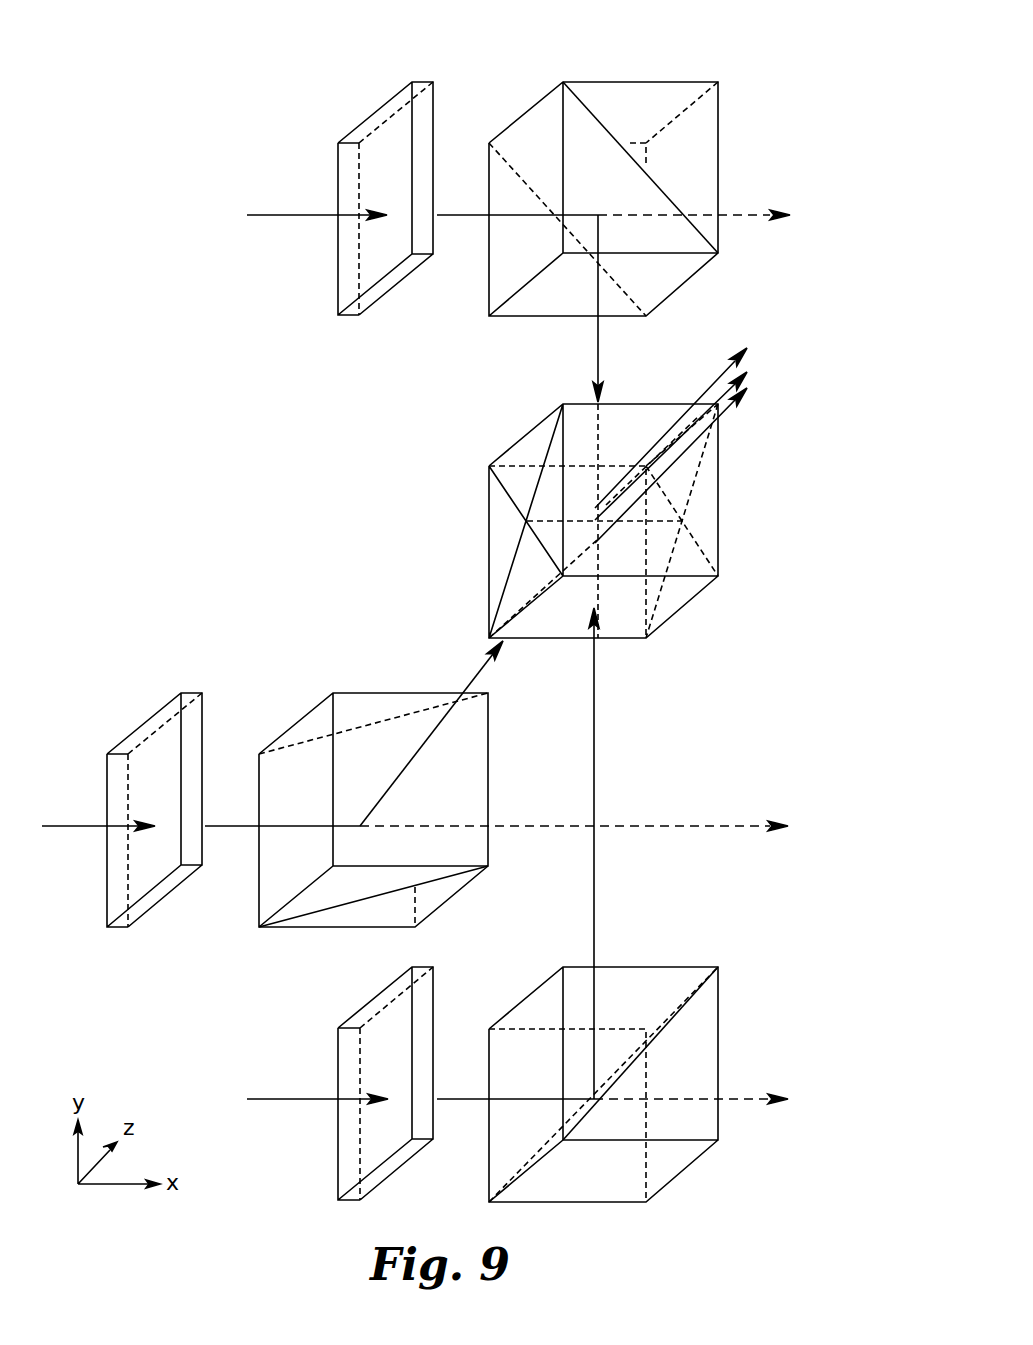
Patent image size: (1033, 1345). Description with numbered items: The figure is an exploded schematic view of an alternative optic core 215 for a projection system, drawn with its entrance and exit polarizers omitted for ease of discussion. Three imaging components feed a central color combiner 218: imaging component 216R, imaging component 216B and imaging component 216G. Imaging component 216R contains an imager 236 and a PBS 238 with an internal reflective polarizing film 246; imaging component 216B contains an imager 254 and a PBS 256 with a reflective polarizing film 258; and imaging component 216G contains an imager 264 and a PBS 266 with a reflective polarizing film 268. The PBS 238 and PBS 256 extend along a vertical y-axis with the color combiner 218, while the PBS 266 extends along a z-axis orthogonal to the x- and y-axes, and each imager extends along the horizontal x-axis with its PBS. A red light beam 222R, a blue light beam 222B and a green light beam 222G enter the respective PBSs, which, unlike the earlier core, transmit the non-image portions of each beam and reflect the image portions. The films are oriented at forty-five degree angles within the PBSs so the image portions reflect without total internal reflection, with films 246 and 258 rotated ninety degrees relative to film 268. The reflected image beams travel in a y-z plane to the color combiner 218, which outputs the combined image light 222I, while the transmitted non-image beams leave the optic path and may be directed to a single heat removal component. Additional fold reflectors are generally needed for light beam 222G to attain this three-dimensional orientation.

The optic core 215 is at (205, 413).
The imaging component 216B is at (388, 52).
The imaging component 216G is at (250, 652).
The imaging component 216R is at (310, 999).
The color combiner 218 is at (718, 520).
The light beam 222B is at (292, 215).
The light beam 222G is at (58, 824).
The light beam 222R is at (297, 1099).
The light beam 222I is at (754, 397).
The imager 254 is at (347, 318).
The PBS 256 is at (645, 80).
The reflective polarizing film 258 is at (663, 280).
The imager 264 is at (120, 930).
The PBS 266 is at (293, 726).
The reflective polarizing film 268 is at (273, 880).
The imager 236 is at (347, 1201).
The PBS 238 is at (490, 1163).
The reflective polarizing film 246 is at (660, 1035).